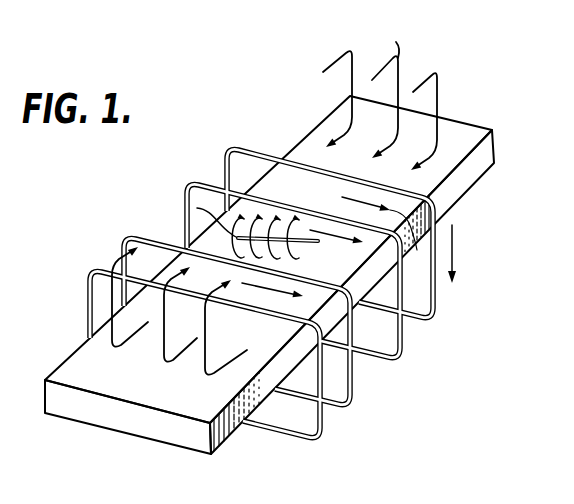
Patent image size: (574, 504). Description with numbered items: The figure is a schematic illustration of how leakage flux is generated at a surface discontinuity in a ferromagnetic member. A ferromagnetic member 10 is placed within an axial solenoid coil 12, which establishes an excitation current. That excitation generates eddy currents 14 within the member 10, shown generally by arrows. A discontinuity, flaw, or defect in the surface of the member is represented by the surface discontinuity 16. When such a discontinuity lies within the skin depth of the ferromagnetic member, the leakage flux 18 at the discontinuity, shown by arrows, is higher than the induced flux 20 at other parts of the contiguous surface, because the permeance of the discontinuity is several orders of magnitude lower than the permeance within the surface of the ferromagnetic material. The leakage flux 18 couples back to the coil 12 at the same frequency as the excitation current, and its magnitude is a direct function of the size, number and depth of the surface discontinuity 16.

The ferromagnetic member 10 is at (483, 152).
The axial solenoid coil 12 is at (438, 318).
The eddy currents 14 is at (305, 296).
The surface discontinuity 16 is at (263, 224).
The leakage flux 18 is at (197, 208).
The induced flux 20 is at (434, 72).